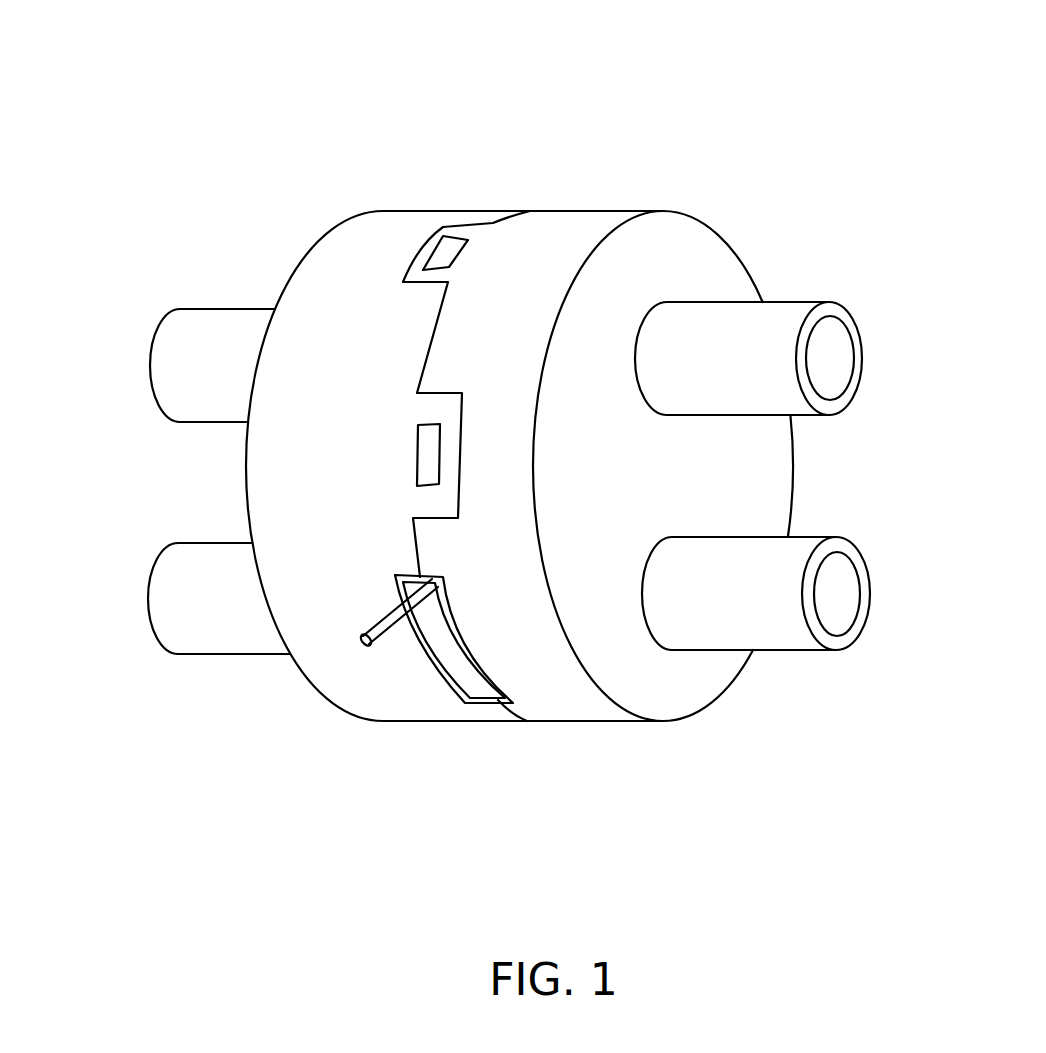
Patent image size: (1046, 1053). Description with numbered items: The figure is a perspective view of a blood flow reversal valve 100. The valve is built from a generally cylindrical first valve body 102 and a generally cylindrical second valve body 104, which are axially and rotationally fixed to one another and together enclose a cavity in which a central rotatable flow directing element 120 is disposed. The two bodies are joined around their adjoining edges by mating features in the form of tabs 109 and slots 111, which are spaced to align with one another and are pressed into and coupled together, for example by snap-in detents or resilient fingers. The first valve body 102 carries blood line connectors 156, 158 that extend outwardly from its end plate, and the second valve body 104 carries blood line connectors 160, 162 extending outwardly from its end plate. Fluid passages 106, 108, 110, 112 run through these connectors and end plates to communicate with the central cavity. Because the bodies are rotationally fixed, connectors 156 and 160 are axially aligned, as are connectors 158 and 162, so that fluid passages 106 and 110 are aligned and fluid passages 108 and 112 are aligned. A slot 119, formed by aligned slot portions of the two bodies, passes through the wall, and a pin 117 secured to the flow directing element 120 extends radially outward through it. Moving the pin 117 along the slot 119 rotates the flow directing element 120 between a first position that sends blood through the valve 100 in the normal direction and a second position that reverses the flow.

The blood flow reversal valve 100 is at (640, 102).
The first valve body 102 is at (674, 236).
The second valve body 104 is at (356, 249).
The fluid passage 106 is at (833, 357).
The fluid passage 108 is at (837, 597).
The tab 109 is at (450, 253).
The fluid passage 110 is at (148, 363).
The slot 111 is at (424, 224).
The fluid passage 112 is at (148, 587).
The pin 117 is at (377, 628).
The slot 119 is at (452, 622).
The flow directing element 120 is at (463, 691).
The blood line connector 156 is at (769, 327).
The blood line connector 158 is at (767, 625).
The blood line connector 160 is at (198, 322).
The blood line connector 162 is at (218, 623).